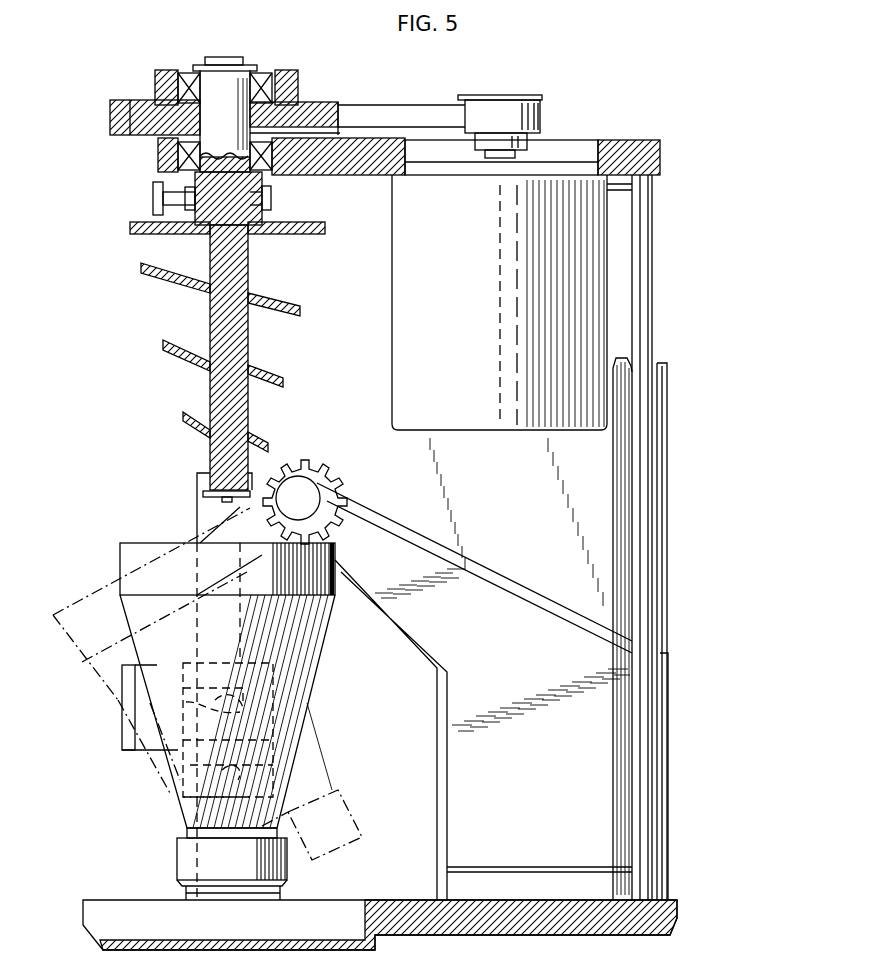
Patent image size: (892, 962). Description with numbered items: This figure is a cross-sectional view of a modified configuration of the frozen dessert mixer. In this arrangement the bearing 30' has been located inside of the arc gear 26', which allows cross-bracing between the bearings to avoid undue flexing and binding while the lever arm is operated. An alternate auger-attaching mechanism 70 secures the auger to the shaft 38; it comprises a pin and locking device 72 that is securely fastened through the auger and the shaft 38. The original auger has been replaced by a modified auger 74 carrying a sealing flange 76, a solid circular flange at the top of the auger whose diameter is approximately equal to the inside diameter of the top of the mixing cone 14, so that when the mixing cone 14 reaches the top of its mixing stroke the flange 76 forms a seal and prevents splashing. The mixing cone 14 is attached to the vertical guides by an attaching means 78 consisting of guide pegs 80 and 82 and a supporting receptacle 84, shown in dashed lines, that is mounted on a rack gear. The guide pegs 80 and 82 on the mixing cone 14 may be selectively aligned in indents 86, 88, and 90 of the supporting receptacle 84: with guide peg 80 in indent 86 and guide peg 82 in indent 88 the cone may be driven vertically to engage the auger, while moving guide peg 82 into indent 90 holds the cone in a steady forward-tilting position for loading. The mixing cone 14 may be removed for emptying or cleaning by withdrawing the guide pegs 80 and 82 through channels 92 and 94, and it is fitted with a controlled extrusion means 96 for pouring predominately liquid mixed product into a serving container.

The mixing cone 14 is at (120, 543).
The arc gear 26' is at (518, 537).
The bearing 30' is at (701, 631).
The shaft 38 is at (220, 57).
The auger-attaching mechanism 70 is at (140, 192).
The pin and locking device 72 is at (272, 200).
The modified auger 74 is at (196, 353).
The sealing flange 76 is at (322, 236).
The attaching means 78 is at (133, 777).
The guide peg 80 is at (300, 697).
The guide peg 82 is at (293, 757).
The supporting receptacle 84 is at (305, 727).
The indent 86 is at (188, 713).
The indent 88 is at (190, 812).
The indent 90 is at (290, 787).
The channel 92 is at (185, 686).
The channel 94 is at (132, 768).
The controlled extrusion means 96 is at (177, 856).